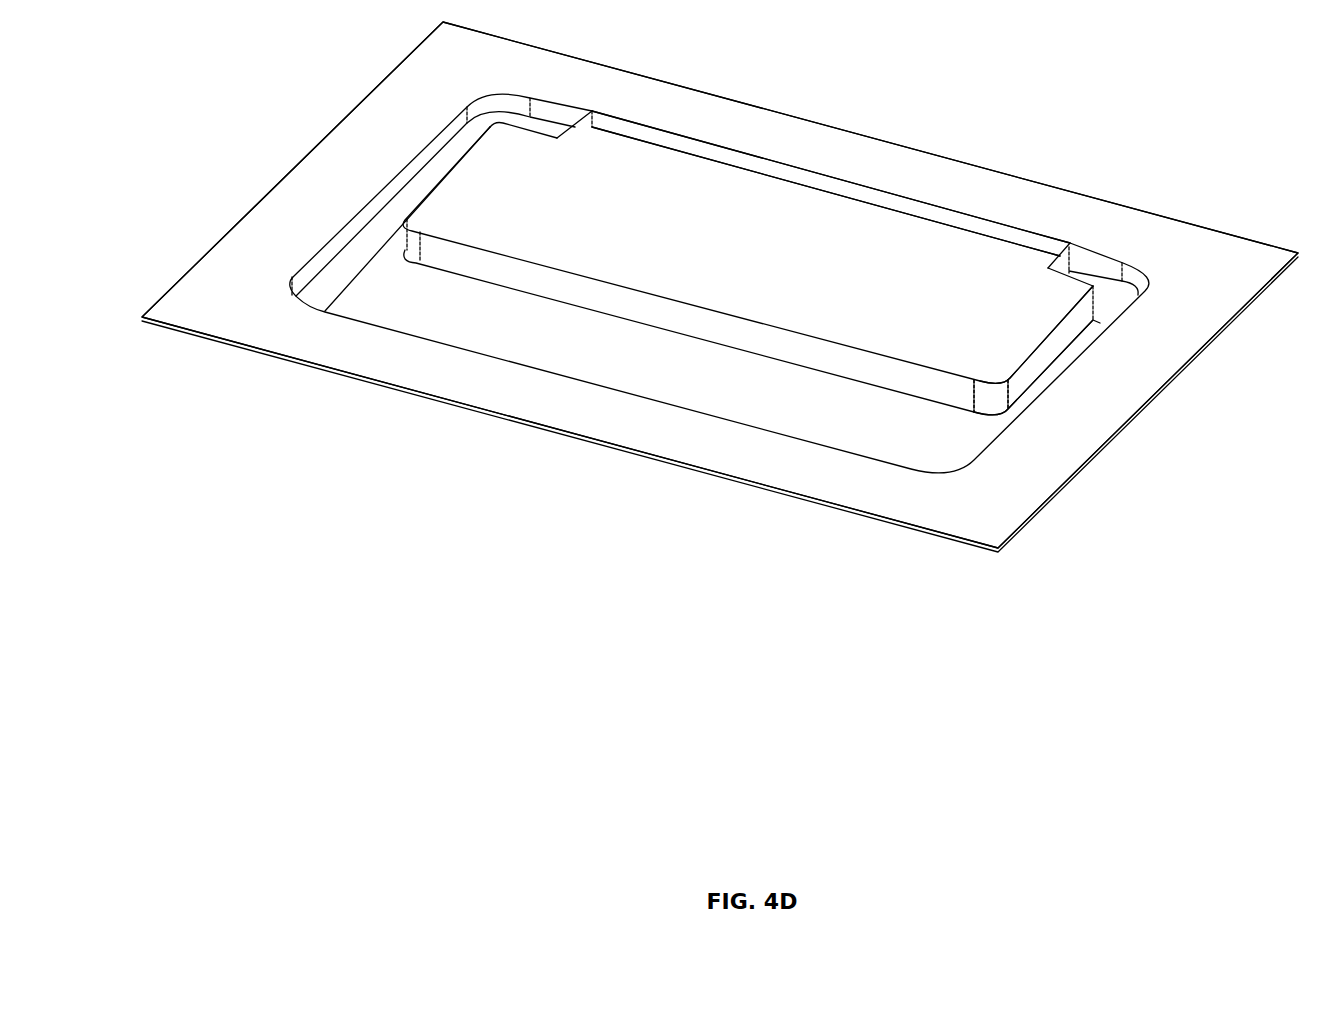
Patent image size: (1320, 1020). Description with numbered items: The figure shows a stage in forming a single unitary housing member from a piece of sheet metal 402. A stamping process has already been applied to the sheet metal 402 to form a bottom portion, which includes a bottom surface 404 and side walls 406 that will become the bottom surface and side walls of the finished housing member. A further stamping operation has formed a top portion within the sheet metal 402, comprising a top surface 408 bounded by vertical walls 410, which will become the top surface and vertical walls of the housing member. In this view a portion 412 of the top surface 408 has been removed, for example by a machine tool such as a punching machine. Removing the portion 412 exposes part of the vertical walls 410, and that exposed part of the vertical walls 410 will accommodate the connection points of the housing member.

The sheet metal 402 is at (517, 418).
The bottom surface 404 is at (770, 390).
The side walls 406 is at (323, 257).
The top surface 408 is at (760, 243).
The vertical walls 410 is at (985, 397).
The portion 412 is at (1002, 233).